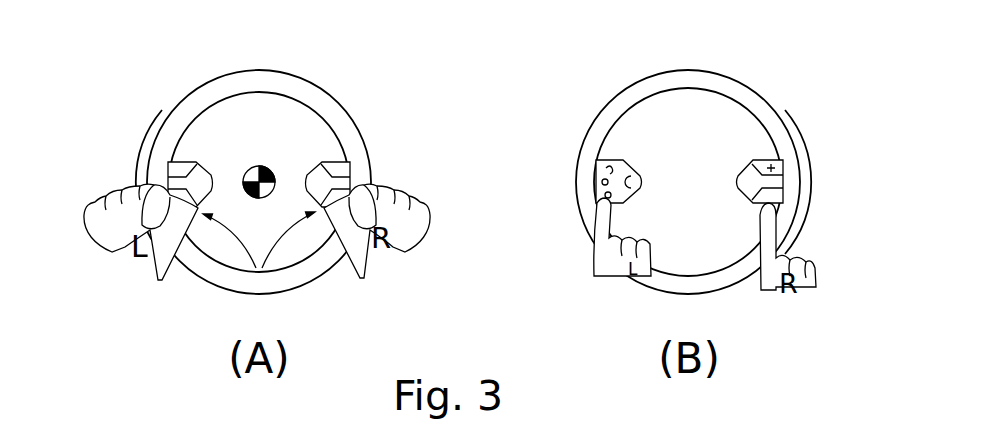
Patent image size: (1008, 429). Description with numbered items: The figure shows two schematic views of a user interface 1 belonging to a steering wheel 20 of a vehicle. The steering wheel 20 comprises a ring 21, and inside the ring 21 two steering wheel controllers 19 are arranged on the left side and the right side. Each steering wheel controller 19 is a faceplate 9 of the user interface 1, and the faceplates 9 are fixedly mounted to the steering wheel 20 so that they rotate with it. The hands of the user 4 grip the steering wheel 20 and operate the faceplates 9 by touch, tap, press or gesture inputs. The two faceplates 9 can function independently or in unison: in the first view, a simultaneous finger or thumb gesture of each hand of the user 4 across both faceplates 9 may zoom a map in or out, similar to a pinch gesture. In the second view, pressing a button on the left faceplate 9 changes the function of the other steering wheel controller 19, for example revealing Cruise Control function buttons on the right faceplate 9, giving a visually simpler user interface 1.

The user interface 1 is at (471, 148).
The user 4 is at (125, 247).
The faceplate 9 is at (483, 126).
The steering wheel controller 19 is at (183, 170).
The steering wheel 20 is at (157, 159).
The ring 21 is at (264, 78).